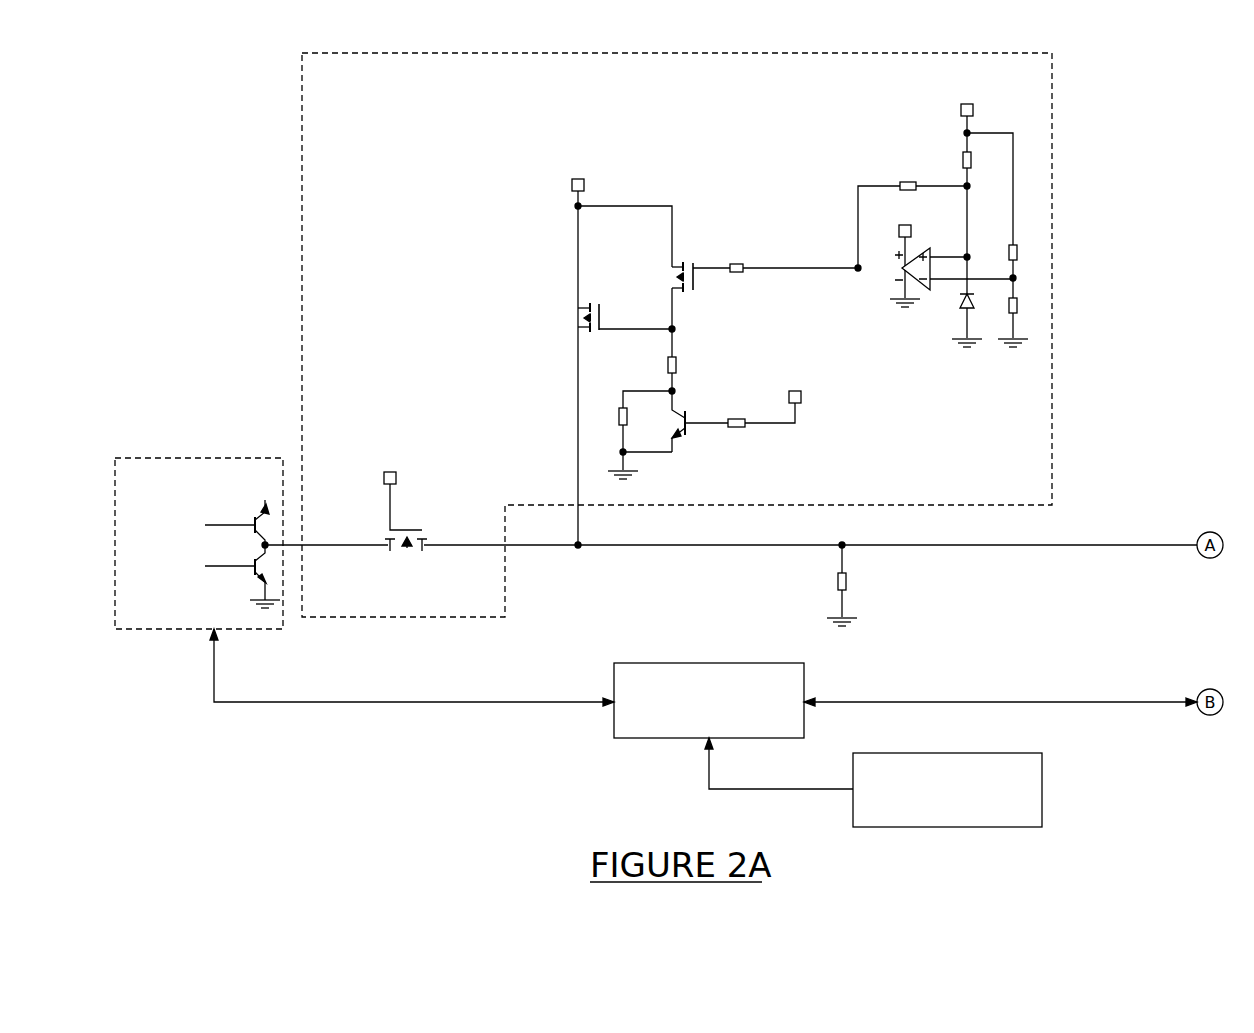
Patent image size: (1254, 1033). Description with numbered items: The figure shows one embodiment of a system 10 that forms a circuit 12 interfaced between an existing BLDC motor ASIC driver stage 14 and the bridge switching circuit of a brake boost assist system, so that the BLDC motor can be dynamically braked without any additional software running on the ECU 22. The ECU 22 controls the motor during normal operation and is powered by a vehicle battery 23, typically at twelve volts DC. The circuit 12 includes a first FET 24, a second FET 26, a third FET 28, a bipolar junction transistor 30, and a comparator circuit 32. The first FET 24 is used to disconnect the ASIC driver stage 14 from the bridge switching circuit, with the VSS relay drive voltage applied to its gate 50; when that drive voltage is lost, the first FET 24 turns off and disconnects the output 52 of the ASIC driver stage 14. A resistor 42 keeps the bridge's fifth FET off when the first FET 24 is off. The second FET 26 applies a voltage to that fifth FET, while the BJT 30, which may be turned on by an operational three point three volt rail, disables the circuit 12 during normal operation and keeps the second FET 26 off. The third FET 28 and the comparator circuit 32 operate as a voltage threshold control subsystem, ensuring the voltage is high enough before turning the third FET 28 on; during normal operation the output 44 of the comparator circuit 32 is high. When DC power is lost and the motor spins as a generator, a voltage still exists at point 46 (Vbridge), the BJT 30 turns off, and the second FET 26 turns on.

The system 10 is at (196, 70).
The circuit 12 is at (300, 192).
The BLDC motor ASIC driver stage 14 is at (170, 458).
The ECU 22 is at (661, 663).
The battery 23 is at (900, 753).
The first FET 24 is at (426, 546).
The second FET 26 is at (604, 333).
The third FET 28 is at (697, 287).
The bipolar junction transistor 30 is at (674, 412).
The comparator circuit 32 is at (933, 292).
The resistor 42 is at (835, 578).
The output of comparator circuit 44 is at (772, 270).
The point (Vbridge) 46 is at (585, 185).
The gate of first FET 50 is at (405, 528).
The output of ASIC driver stage 52 is at (262, 546).